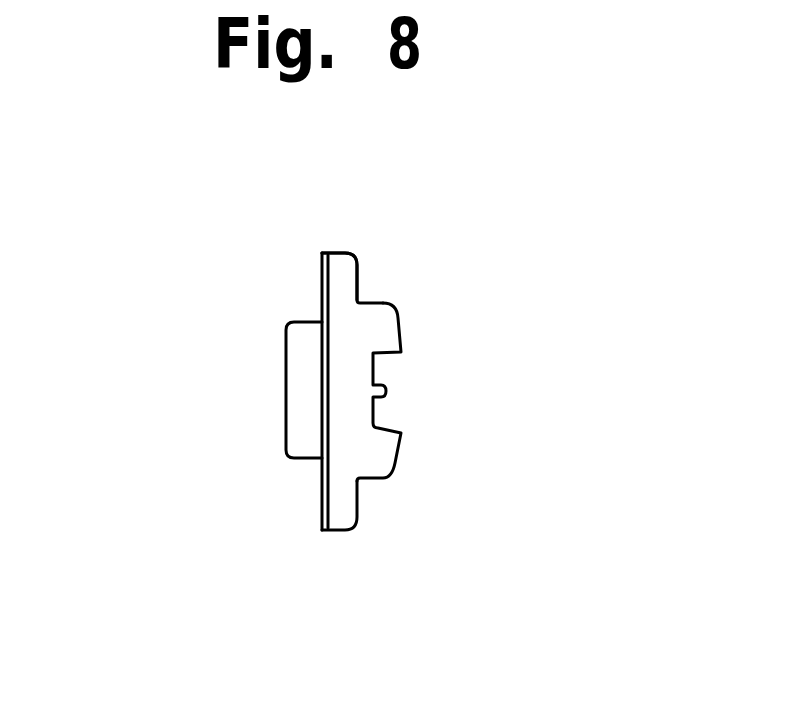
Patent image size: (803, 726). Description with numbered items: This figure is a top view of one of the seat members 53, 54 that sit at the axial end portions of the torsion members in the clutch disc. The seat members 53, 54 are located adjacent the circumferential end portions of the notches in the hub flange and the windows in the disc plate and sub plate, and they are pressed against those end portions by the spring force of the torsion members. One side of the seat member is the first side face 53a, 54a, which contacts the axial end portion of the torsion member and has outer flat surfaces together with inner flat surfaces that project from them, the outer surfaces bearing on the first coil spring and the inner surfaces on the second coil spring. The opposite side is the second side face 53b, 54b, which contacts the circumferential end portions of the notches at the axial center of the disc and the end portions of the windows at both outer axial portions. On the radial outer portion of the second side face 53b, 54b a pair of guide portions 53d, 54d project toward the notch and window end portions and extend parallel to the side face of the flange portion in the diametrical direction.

The seat member 53 is at (418, 337).
The seat member 54 is at (348, 248).
The first side face 53a is at (463, 272).
The first side face 54a is at (322, 299).
The second side face 53b is at (215, 390).
The second side face 54b is at (373, 395).
The guide portions 53d is at (508, 392).
The guide portions 54d is at (370, 337).